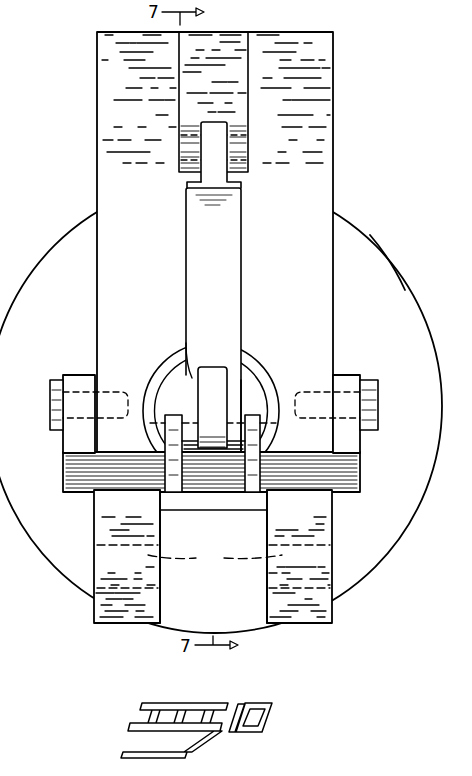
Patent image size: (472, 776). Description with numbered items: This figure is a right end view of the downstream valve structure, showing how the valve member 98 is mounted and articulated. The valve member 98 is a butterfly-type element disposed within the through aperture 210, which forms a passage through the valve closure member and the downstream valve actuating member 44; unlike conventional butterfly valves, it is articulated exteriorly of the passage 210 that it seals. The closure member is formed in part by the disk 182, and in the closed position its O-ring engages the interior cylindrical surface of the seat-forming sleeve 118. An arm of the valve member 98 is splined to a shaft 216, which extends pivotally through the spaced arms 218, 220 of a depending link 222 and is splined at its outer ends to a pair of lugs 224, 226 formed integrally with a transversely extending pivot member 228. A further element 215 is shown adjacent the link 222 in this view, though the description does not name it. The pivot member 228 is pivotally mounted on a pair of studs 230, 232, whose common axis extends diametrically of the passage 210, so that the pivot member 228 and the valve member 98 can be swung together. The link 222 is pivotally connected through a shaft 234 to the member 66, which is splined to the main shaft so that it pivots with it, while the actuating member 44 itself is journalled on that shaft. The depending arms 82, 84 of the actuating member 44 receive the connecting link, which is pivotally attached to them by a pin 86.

The downstream valve actuating member 44 is at (333, 146).
The member 66 is at (240, 106).
The depending arm 82 is at (127, 623).
The depending arm 84 is at (300, 623).
The pin 86 is at (215, 556).
The valve member 98 is at (251, 377).
The sleeve 118 is at (410, 313).
The disk 182 is at (400, 262).
The through aperture 210 is at (247, 354).
The plunger 215 is at (208, 392).
The shaft 216 is at (262, 444).
The arm 218 is at (187, 345).
The arm 220 is at (235, 393).
The depending link 222 is at (242, 295).
The lug 224 is at (172, 465).
The lug 226 is at (262, 468).
The pivot member 228 is at (198, 490).
The stud 230 is at (52, 398).
The stud 232 is at (378, 404).
The shaft 234 is at (193, 138).